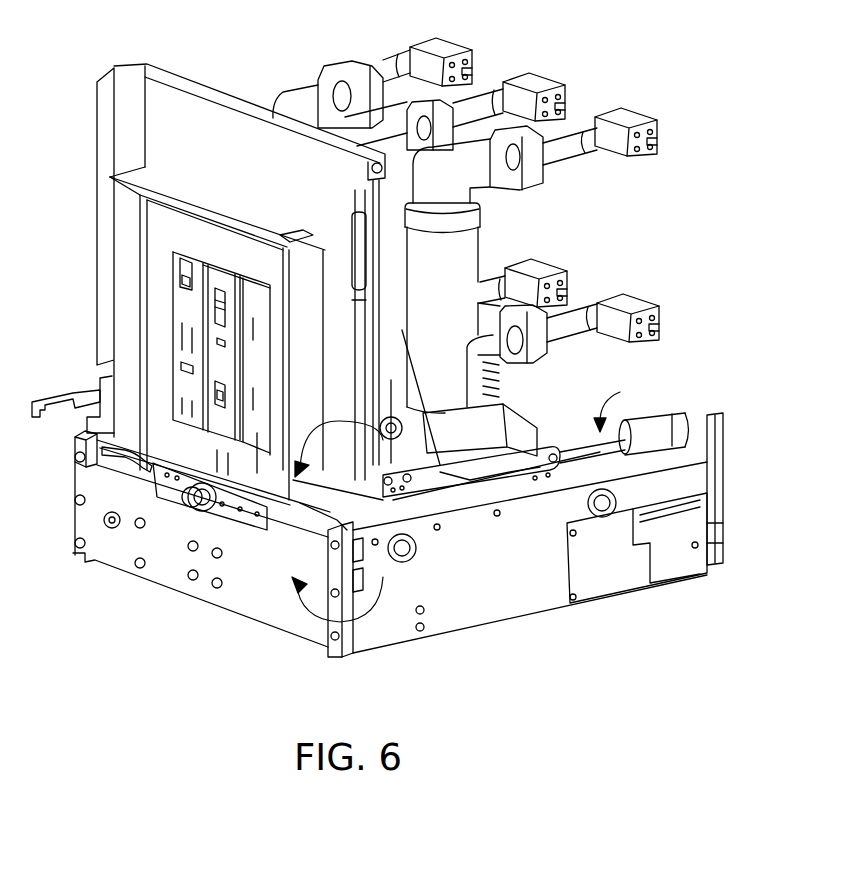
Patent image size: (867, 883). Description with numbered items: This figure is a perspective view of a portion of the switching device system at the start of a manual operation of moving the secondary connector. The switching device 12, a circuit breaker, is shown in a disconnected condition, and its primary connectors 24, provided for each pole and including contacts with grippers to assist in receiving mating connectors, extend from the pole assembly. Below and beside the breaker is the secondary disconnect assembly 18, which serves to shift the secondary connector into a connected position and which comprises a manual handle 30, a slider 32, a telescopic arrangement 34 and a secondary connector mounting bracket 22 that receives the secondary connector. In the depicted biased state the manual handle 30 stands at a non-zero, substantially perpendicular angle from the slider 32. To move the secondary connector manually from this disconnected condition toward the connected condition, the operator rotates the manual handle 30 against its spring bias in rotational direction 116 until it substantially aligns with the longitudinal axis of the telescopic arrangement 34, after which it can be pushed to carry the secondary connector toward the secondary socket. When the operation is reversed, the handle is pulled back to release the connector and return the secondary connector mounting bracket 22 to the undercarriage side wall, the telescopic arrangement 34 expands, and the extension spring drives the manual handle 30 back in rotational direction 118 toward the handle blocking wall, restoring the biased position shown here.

The switching device 12 is at (302, 107).
The primary connectors 24 is at (630, 117).
The manual handle 30 is at (356, 327).
The secondary disconnect assembly 18 is at (620, 406).
The telescopic arrangement 34 is at (663, 440).
The secondary connector mounting bracket 22 is at (723, 440).
The slider 32 is at (443, 480).
The rotational direction 116 is at (275, 520).
The rotational direction 118 is at (383, 622).